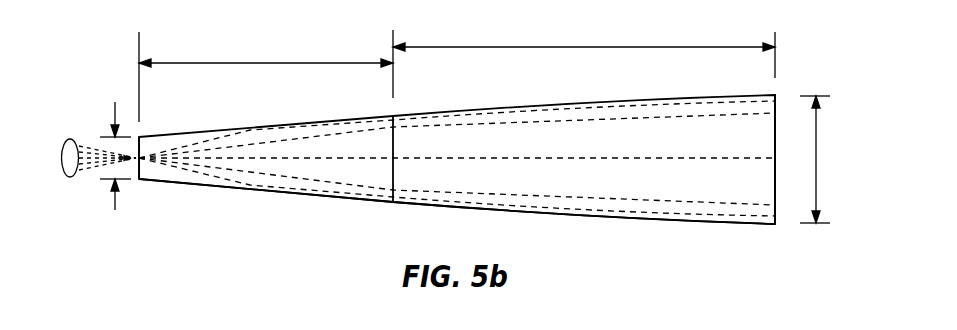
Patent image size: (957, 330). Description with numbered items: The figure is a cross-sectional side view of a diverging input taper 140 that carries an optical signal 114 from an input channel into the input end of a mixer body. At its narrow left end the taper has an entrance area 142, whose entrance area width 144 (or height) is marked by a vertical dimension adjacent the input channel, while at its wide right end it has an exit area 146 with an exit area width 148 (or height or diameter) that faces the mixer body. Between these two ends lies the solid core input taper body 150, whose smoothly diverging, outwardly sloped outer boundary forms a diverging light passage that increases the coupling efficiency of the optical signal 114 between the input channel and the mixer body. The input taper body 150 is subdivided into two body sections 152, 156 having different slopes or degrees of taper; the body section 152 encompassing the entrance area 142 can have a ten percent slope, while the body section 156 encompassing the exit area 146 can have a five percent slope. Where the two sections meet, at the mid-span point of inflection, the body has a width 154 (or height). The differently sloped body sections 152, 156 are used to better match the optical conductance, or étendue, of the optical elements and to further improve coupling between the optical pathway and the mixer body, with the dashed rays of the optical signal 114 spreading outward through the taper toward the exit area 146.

The optical signal 114 is at (296, 140).
The diverging input taper 140 is at (667, 244).
The entrance area 142 is at (141, 140).
The entrance area width 144 is at (112, 144).
The exit area 146 is at (777, 130).
The exit area width 148 is at (818, 152).
The input taper body 150 is at (573, 215).
The body section 152 is at (255, 63).
The width at the mid-span point of inflection 154 is at (393, 147).
The body section 156 is at (608, 47).